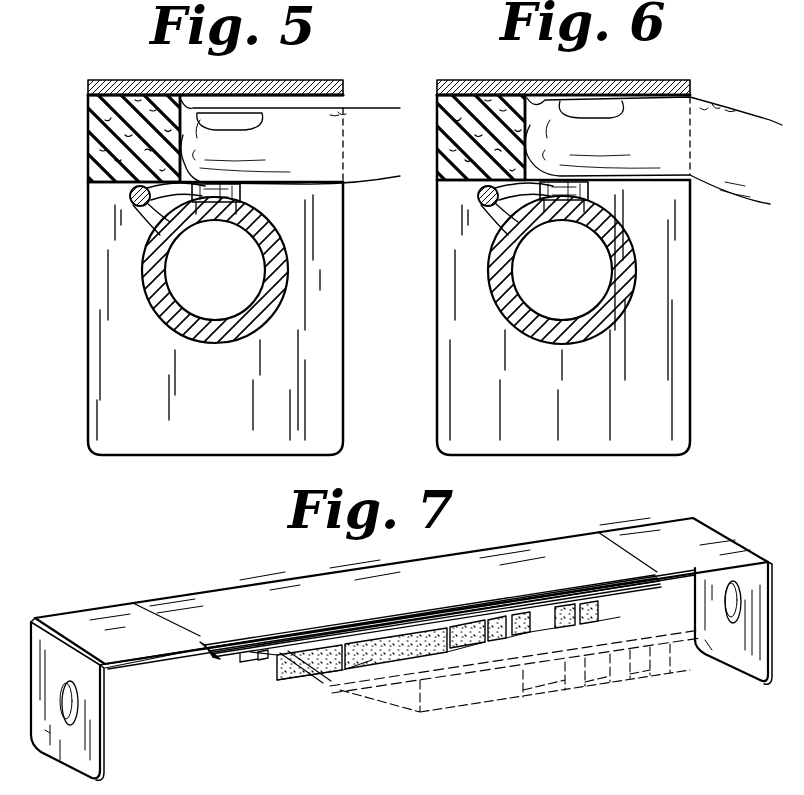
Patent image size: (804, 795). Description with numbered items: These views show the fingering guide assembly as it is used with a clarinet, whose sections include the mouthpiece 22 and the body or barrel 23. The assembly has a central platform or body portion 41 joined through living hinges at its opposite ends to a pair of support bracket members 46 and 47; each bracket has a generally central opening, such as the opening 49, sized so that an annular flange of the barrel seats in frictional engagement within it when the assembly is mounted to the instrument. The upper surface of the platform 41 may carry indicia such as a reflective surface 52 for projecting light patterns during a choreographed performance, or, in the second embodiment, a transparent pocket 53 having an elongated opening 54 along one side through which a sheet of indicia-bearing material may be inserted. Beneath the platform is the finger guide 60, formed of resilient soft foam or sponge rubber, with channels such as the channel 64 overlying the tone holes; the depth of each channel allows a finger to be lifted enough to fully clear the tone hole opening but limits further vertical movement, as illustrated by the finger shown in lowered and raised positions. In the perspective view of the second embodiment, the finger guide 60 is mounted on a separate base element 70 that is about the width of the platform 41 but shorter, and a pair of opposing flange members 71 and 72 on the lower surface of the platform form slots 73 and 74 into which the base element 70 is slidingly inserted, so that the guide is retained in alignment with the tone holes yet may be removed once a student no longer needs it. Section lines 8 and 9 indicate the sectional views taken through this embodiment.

In FIG. 7, the section line 8- 8 is at (512, 538).
In FIG. 7, the section line 9- 9 is at (70, 654).
In FIG. 5, the mouthpiece 22 is at (248, 155).
In FIG. 5, the barrel 23 is at (142, 270).
In FIG. 6, the barrel 23 is at (488, 270).
In FIG. 5, the platform 41 is at (86, 93).
In FIG. 6, the platform 41 is at (740, 70).
In FIG. 7, the platform 41 is at (640, 516).
In FIG. 5, the support bracket member 46 is at (88, 405).
In FIG. 6, the support bracket member 46 is at (690, 357).
In FIG. 7, the support bracket member 47 is at (102, 752).
In FIG. 7, the central opening 49 is at (76, 705).
In FIG. 5, the reflective surface 52 is at (314, 66).
In FIG. 7, the pocket 53 is at (233, 588).
In FIG. 7, the elongated opening 54 is at (590, 582).
In FIG. 5, the finger guide 60 is at (88, 128).
In FIG. 6, the finger guide 60 is at (480, 92).
In FIG. 7, the finger guide 60 is at (360, 650).
In FIG. 5, the channel 64 is at (215, 104).
In FIG. 6, the channel 64 is at (545, 92).
In FIG. 7, the base element 70 is at (296, 628).
In FIG. 7, the flange member 71 is at (645, 590).
In FIG. 7, the flange member 72 is at (246, 660).
In FIG. 7, the slot 73 is at (650, 572).
In FIG. 7, the slot 74 is at (262, 660).